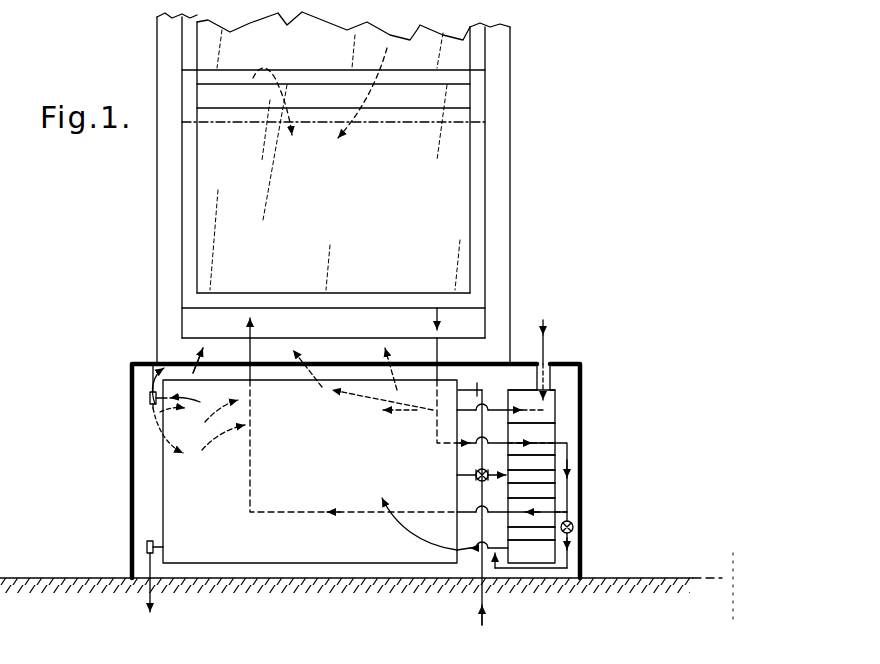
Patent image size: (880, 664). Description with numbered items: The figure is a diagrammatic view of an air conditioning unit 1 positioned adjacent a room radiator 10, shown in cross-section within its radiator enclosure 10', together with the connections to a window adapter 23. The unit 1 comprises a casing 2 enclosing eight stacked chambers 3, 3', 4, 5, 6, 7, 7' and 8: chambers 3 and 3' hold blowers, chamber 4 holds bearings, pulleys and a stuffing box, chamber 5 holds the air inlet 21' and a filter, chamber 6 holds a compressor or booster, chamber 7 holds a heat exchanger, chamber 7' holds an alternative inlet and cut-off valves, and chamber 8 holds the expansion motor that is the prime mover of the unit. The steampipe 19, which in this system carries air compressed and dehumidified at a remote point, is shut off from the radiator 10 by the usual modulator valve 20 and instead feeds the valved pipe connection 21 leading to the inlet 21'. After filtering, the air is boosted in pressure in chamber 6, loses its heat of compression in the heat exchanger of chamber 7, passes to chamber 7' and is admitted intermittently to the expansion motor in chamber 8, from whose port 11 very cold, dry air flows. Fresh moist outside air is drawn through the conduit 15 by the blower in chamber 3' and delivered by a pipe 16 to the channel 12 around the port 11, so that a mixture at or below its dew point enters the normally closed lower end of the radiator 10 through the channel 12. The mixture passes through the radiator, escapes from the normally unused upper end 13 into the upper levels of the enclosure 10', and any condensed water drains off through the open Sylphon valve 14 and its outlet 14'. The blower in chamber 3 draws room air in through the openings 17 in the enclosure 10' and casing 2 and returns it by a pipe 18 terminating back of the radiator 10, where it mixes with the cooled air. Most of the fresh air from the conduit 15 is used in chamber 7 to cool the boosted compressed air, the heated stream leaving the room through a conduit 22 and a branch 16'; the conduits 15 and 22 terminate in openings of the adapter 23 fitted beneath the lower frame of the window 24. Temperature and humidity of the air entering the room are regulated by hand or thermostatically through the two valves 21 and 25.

The air conditioning unit 1 is at (560, 420).
The casing 2 is at (553, 434).
The chamber 3 is at (531, 406).
The chamber 3' is at (531, 435).
The chamber 4 is at (531, 463).
The chamber 5 is at (531, 476).
The chamber 6 is at (531, 491).
The chamber 7 is at (531, 505).
The chamber 7' is at (531, 533).
The chamber 8 is at (531, 549).
The radiator 10 is at (310, 455).
The radiator enclosure 10' is at (376, 471).
The port 11 is at (499, 573).
The channel 12 is at (462, 552).
The upper end 13 is at (148, 394).
The Sylphon valve 14 is at (129, 559).
The drain outlet 14' is at (125, 605).
The conduit 15 is at (440, 342).
The pipe 16 is at (581, 505).
The branch pipe 16' is at (583, 498).
The openings 17 is at (550, 378).
The pipe 18 is at (493, 398).
The steampipe 19 is at (478, 604).
The modulator valve 20 is at (477, 383).
The valved pipe connection 21 is at (455, 470).
The inlet 21' is at (497, 460).
The conduit 22 is at (252, 343).
The adapter 23 is at (348, 332).
The window 24 is at (495, 190).
The valve 25 is at (573, 522).